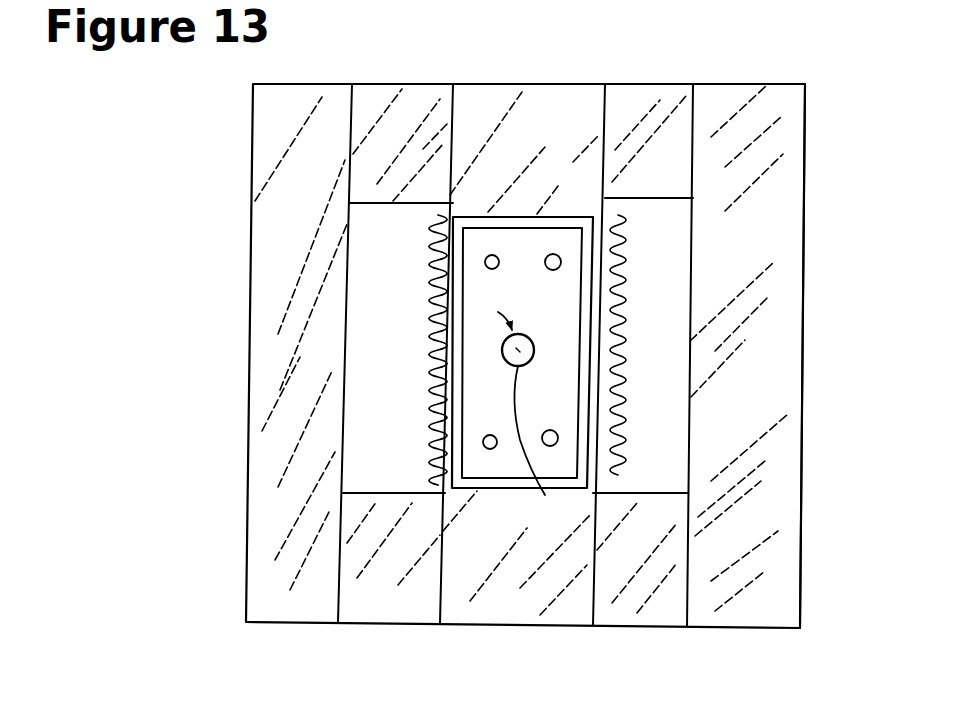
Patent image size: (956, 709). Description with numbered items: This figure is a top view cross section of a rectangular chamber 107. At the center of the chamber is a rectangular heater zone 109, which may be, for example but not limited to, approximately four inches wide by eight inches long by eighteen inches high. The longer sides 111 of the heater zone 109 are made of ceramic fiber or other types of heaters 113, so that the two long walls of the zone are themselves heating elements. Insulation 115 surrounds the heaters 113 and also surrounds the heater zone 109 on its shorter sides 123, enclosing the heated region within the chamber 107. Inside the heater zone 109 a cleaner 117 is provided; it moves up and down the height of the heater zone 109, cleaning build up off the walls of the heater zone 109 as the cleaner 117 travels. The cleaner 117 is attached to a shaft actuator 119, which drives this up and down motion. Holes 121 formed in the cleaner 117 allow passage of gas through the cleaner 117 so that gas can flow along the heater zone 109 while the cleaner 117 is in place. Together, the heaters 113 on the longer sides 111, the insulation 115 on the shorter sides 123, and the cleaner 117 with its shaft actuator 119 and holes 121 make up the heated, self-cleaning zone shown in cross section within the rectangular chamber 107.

The rectangular chamber 107 is at (175, 364).
The heater zone 109 is at (515, 207).
The longer sides 111 is at (443, 223).
The heaters 113 is at (346, 277).
The insulation 115 is at (760, 480).
The cleaner 117 is at (570, 212).
The shaft actuator 119 is at (545, 495).
The holes 121 is at (488, 450).
The shorter sides 123 is at (558, 243).